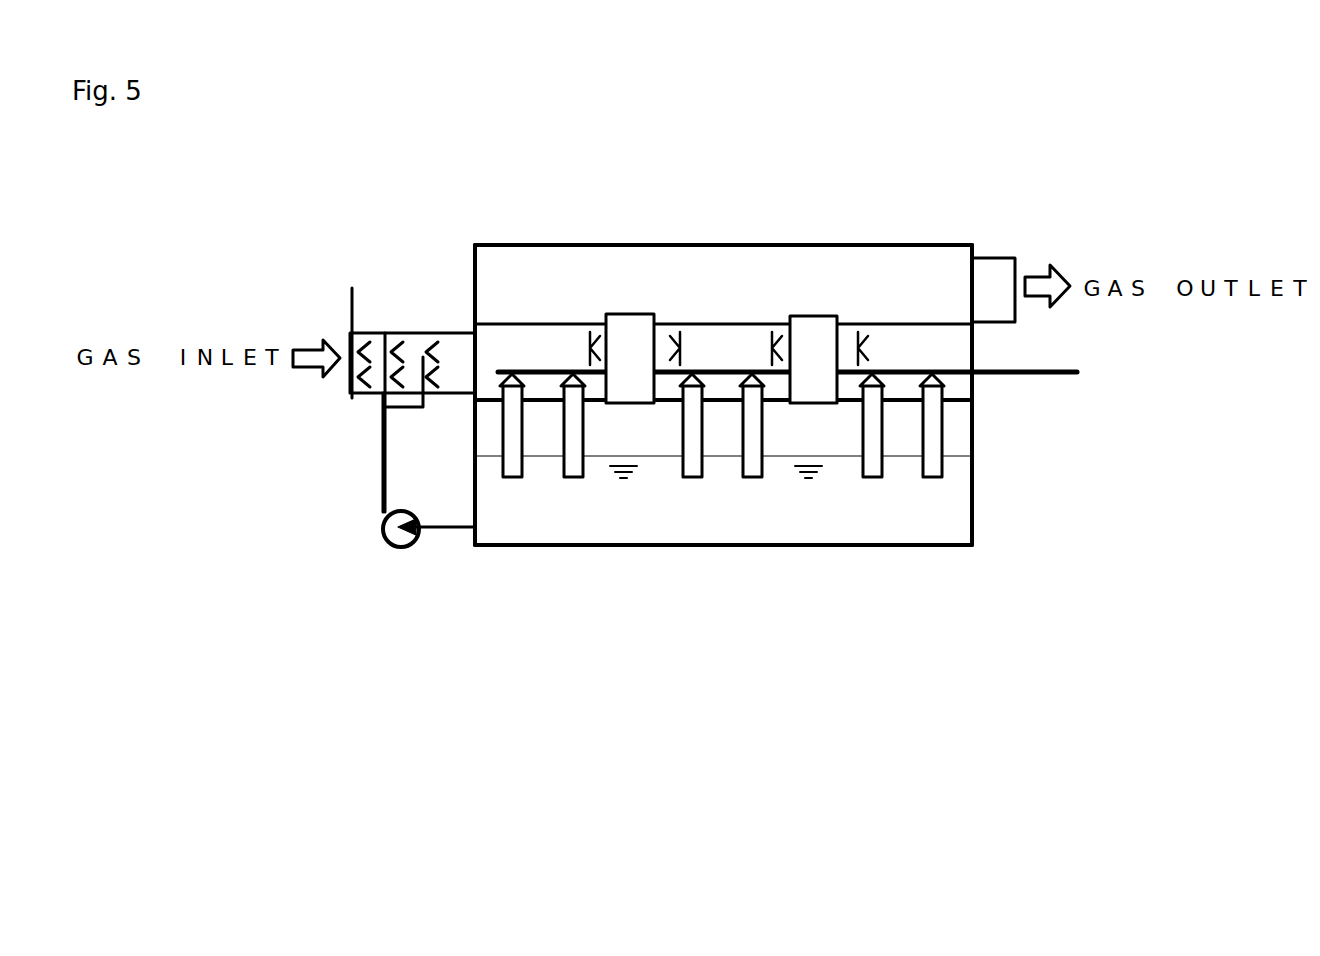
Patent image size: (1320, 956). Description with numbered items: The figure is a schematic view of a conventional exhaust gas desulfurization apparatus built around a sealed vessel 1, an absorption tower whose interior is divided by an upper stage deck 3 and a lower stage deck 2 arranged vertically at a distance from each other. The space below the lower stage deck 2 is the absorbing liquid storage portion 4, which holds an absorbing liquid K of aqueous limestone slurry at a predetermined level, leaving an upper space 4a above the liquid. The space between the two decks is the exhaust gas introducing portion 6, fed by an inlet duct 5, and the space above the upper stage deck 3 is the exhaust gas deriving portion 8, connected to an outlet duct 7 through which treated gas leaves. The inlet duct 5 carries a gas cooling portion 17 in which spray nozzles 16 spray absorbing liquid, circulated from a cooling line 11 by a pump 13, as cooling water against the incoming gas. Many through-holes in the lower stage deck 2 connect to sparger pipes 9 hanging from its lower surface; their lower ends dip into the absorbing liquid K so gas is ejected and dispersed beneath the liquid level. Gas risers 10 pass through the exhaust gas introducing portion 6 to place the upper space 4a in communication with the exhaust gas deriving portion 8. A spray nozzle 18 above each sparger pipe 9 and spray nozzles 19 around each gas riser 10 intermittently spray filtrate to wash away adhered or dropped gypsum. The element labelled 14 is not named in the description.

The sealed vessel 1 is at (990, 470).
The lower stage deck 2 is at (478, 403).
The upper stage deck 3 is at (508, 324).
The absorbing liquid storage portion 4 is at (940, 525).
The upper space 4a is at (955, 428).
The inlet duct 5 is at (407, 332).
The exhaust gas introducing portion 6 is at (958, 352).
The outlet duct 7 is at (1000, 260).
The exhaust gas deriving portion 8 is at (700, 258).
The sparger pipes 9 is at (570, 435).
The gas risers 10 is at (620, 325).
The cooling line 11 is at (383, 478).
The pump 13 is at (402, 548).
The inlet wall 14 is at (357, 395).
The spray nozzles 16 is at (397, 353).
The gas cooling portion 17 is at (449, 350).
The spray nozzle 18 is at (512, 374).
The spray nozzles 19 is at (590, 340).
The absorbing liquid K is at (802, 535).